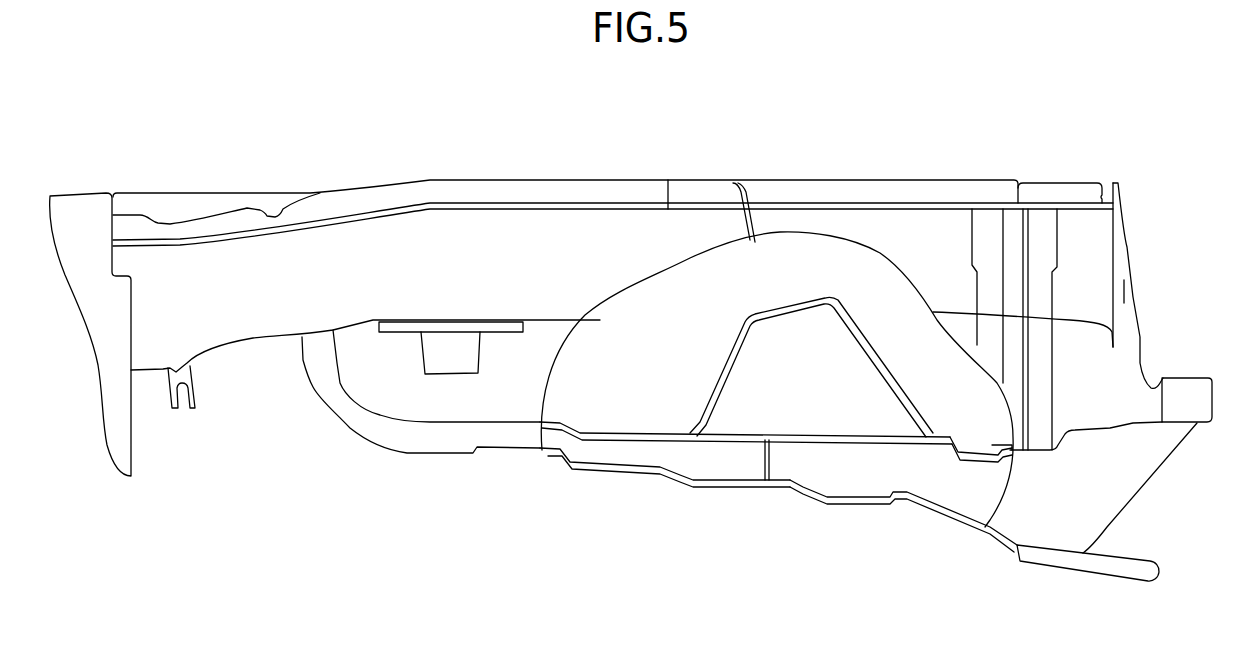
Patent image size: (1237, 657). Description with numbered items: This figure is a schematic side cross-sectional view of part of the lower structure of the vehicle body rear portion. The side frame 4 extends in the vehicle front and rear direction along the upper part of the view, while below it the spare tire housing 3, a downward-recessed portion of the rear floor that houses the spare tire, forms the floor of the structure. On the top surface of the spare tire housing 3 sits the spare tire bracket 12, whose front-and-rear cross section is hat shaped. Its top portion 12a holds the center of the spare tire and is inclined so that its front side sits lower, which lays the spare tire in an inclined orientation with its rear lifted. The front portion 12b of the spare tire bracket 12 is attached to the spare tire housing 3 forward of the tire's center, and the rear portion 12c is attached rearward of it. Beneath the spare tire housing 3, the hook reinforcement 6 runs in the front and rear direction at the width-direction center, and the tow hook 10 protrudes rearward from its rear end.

The side frame 4 is at (623, 181).
The spare tire bracket 12 is at (808, 288).
The top portion 12a is at (785, 300).
The front portion 12b is at (615, 432).
The rear portion 12c is at (977, 443).
The hook reinforcement 6 is at (725, 483).
The spare tire housing 3 is at (817, 443).
The tow hook 10 is at (1102, 562).